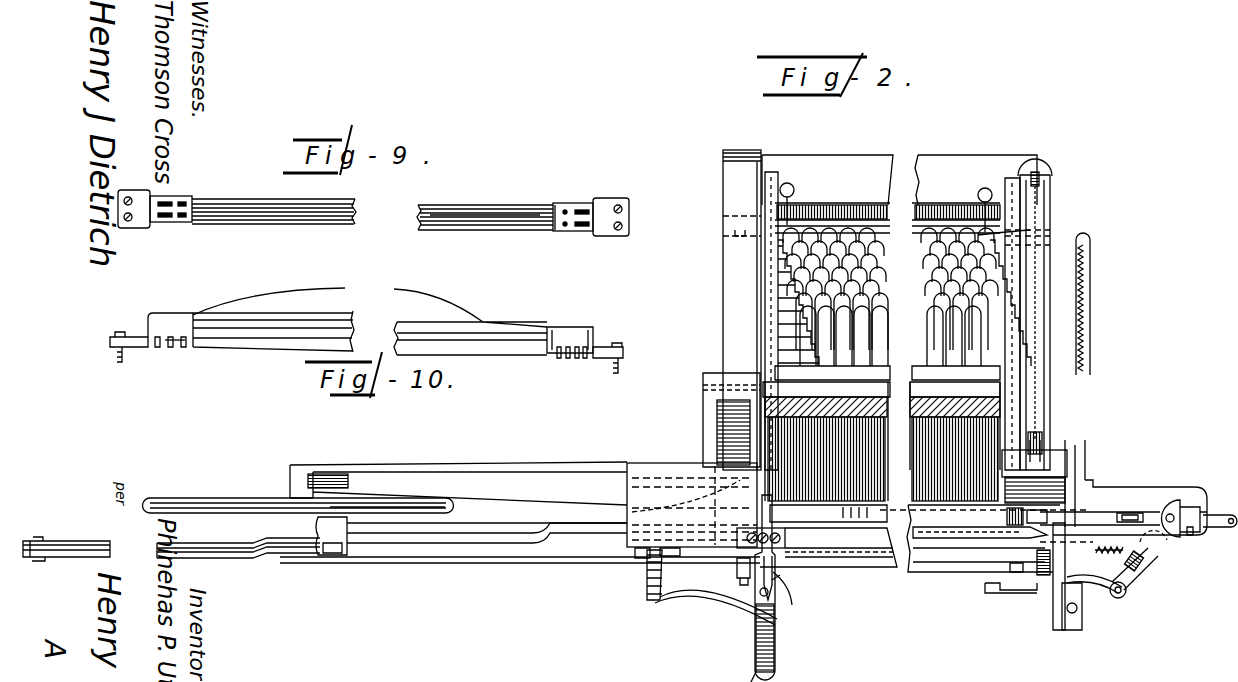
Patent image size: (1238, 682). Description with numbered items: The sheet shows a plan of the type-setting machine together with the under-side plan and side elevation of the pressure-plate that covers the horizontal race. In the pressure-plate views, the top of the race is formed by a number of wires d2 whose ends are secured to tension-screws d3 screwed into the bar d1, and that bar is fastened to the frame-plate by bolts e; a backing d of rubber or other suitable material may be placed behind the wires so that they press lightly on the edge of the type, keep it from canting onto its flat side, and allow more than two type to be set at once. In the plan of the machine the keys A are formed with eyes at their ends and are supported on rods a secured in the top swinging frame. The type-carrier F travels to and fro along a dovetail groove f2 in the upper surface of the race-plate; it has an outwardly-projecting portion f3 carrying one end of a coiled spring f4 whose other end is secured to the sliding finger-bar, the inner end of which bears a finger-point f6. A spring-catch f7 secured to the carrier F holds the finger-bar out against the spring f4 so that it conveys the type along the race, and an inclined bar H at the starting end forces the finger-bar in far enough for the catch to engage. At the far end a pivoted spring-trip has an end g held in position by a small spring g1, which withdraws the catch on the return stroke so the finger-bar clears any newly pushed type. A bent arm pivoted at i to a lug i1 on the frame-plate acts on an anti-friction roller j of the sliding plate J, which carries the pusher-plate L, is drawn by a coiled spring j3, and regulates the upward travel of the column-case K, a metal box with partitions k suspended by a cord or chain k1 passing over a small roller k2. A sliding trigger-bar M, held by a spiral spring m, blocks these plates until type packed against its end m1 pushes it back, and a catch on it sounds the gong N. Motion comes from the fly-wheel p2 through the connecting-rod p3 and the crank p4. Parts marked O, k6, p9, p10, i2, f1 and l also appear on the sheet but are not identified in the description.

In FIG. 9, the bolts e is at (118, 205).
In FIG. 10, the bolts e is at (110, 345).
In FIG. 9, the backing d is at (466, 228).
In FIG. 10, the backing d is at (347, 333).
In FIG. 9, the bar d1 is at (572, 208).
In FIG. 10, the bar d1 is at (338, 304).
In FIG. 9, the wires d2 is at (248, 194).
In FIG. 10, the wires d2 is at (185, 350).
In FIG. 9, the tension-screws d3 is at (176, 202).
In FIG. 10, the tension-screws d3 is at (160, 348).
In FIG. 2, the upright post O is at (740, 310).
In FIG. 2, the keys A is at (900, 298).
In FIG. 2, the rods a is at (1028, 318).
In FIG. 2, the cord or chain k1 is at (1045, 215).
In FIG. 2, the small roller k2 is at (1048, 182).
In FIG. 2, the dome cap k6 is at (1046, 160).
In FIG. 2, the coiled spring j3 is at (1090, 293).
In FIG. 2, the partitions k is at (1034, 525).
In FIG. 2, the fly-wheel p2 is at (228, 488).
In FIG. 2, the connecting-rod p3 is at (408, 512).
In FIG. 2, the crank p4 is at (318, 528).
In FIG. 2, the lower rail p9 is at (462, 566).
In FIG. 2, the bar p10 is at (201, 543).
In FIG. 2, the rod i2 is at (487, 519).
In FIG. 2, the inclined bar H is at (690, 600).
In FIG. 2, the type-carrier F is at (772, 580).
In FIG. 2, the screw bracket f1 is at (761, 523).
In FIG. 2, the finger-point f6 is at (828, 513).
In FIG. 2, the spring-catch f7 is at (772, 577).
In FIG. 2, the outwardly-projecting portion f3 is at (775, 615).
In FIG. 2, the coiled spring f4 is at (745, 655).
In FIG. 2, the column-case K is at (875, 558).
In FIG. 2, the sliding trigger-bar M is at (1123, 511).
In FIG. 2, the gong N is at (1168, 500).
In FIG. 2, the spiral spring m is at (1210, 530).
In FIG. 2, the end of trigger-bar m1 is at (997, 516).
In FIG. 2, the pusher-plate L is at (1037, 516).
In FIG. 2, the dovetail groove f2 is at (983, 538).
In FIG. 2, the small spring g1 is at (980, 543).
In FIG. 2, the end of spring-trip g is at (1000, 596).
In FIG. 2, the pivot i is at (1127, 590).
In FIG. 2, the lug i1 is at (1102, 600).
In FIG. 2, the anti-friction roller j is at (1060, 615).
In FIG. 2, the sliding plate J is at (1070, 632).
In FIG. 2, the pin l is at (1128, 561).